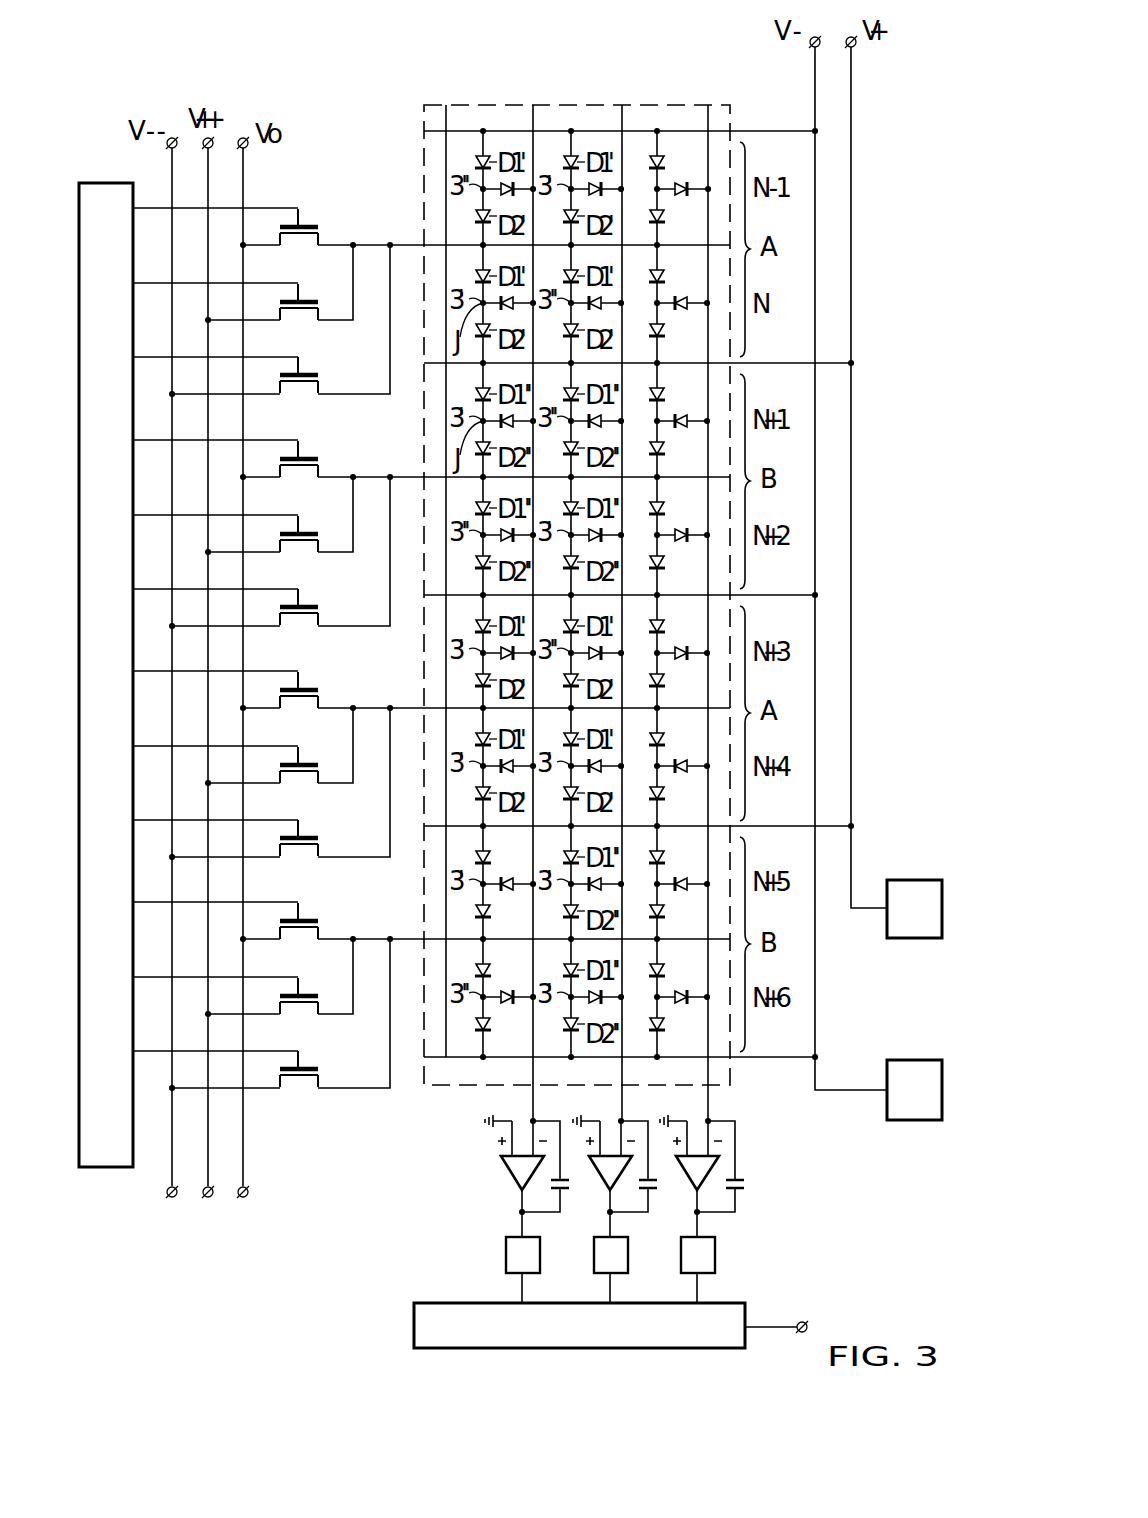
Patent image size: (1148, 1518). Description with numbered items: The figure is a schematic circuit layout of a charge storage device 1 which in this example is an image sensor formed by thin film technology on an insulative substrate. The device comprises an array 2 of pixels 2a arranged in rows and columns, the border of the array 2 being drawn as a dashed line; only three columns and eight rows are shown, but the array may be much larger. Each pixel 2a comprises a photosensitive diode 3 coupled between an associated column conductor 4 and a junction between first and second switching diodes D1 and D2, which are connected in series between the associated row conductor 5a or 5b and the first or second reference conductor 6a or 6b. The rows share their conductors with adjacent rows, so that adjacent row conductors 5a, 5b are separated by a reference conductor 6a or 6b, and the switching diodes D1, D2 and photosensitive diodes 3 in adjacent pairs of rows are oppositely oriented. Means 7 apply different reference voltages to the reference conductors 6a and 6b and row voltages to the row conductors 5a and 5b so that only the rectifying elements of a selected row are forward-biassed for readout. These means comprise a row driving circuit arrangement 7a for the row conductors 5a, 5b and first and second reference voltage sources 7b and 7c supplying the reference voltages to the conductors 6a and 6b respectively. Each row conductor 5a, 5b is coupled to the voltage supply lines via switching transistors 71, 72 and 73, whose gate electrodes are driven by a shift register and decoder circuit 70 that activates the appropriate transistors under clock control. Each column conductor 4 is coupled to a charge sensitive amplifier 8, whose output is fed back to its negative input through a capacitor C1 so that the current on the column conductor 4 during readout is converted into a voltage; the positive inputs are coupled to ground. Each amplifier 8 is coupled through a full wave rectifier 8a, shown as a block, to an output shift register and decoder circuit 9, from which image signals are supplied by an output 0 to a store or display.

The charge storage device 1 is at (729, 90).
The array 2 is at (580, 104).
The pixel 2a is at (680, 165).
The photosensitive diode 3 is at (680, 195).
The column conductor 4 is at (708, 153).
The first row conductor 5a is at (400, 243).
The second row conductor 5b is at (400, 475).
The first reference conductor 6a is at (790, 131).
The second reference conductor 6b is at (790, 363).
The means for applying reference voltages 7 is at (159, 1206).
The row driving circuit arrangement 7a is at (215, 1206).
The first reference voltage source 7b is at (925, 1120).
The second reference voltage source 7c is at (925, 938).
The charge sensitive amplifier 8 is at (520, 1176).
The full wave rectifier 8a is at (506, 1256).
The output shift register and decoder circuit 9 is at (414, 1322).
The output 0 is at (780, 1322).
The shift register and decoder circuit 70 is at (105, 1167).
The switching transistor 71 is at (298, 227).
The switching transistor 72 is at (298, 302).
The switching transistor 73 is at (298, 375).
The first switching diode D1 is at (656, 158).
The second switching diode D2 is at (655, 216).
The capacitor C1 is at (570, 1184).